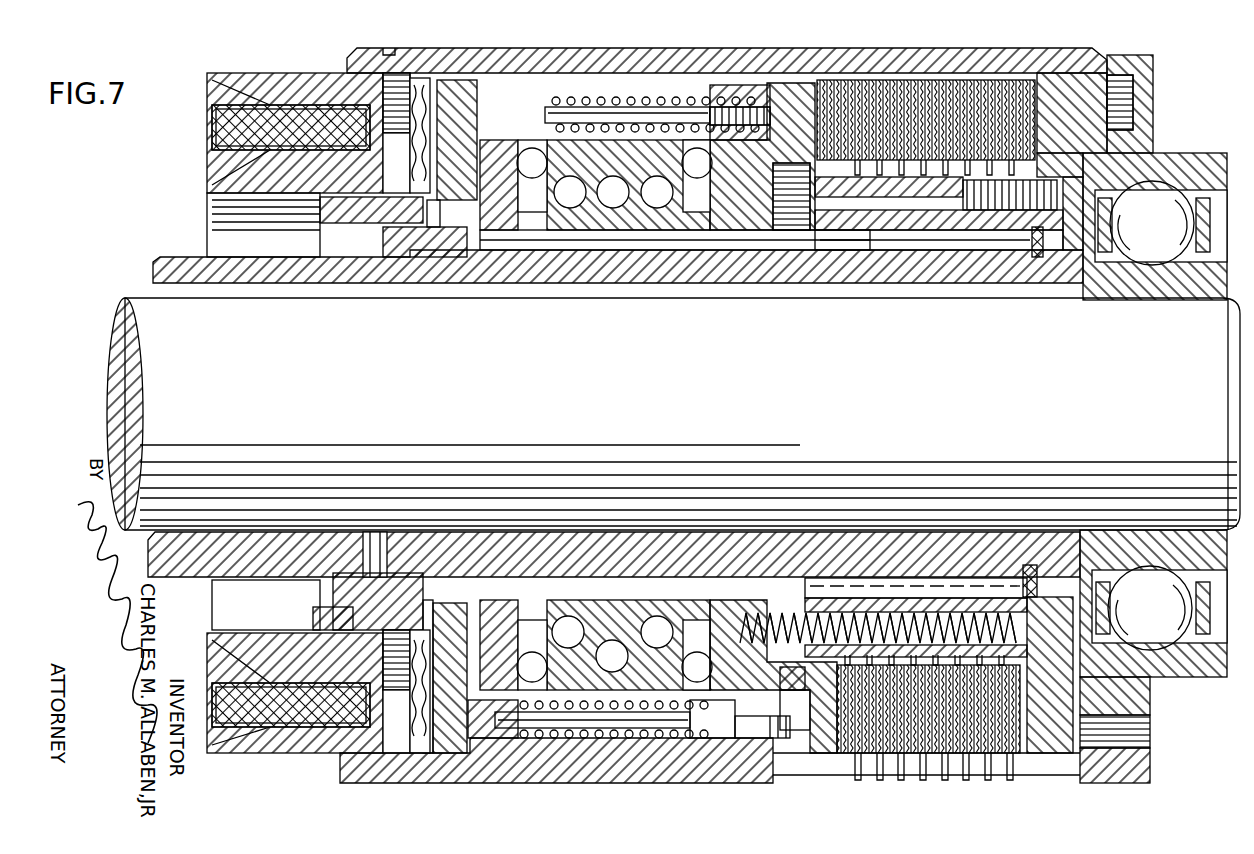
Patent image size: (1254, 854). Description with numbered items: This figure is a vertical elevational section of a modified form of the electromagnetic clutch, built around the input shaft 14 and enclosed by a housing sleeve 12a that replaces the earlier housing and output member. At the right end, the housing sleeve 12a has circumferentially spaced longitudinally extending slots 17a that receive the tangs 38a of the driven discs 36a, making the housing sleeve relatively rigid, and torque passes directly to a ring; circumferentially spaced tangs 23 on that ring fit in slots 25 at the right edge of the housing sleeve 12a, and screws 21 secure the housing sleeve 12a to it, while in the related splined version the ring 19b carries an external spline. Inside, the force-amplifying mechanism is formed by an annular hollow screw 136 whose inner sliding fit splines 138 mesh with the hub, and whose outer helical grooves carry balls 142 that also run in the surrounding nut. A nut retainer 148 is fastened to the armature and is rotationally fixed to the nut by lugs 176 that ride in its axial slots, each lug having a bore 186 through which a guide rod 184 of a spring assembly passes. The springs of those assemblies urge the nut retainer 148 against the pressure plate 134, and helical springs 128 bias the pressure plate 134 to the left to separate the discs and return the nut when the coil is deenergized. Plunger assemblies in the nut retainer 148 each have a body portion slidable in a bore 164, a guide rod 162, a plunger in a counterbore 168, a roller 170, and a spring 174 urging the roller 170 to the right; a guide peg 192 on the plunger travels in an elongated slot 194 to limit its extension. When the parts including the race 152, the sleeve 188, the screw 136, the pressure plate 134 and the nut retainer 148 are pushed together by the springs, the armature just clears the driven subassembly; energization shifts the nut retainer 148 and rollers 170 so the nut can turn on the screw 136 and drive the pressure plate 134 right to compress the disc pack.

The shaft 14 is at (172, 360).
The housing sleeve 12a is at (962, 60).
The screws 21 is at (1138, 58).
The ring 19b is at (1150, 122).
The bore 186 is at (556, 98).
The guide rod 184 is at (632, 95).
The nut retainer 148 is at (740, 86).
The pressure plate 134 is at (808, 96).
The sleeve 188 is at (422, 250).
The race 152 is at (484, 250).
The annular hollow screw 136 is at (578, 205).
The balls 142 is at (612, 200).
The sliding fit splines 138 is at (660, 246).
The helical springs 128 is at (870, 618).
The bore 164 is at (475, 720).
The lugs 176 is at (530, 712).
The guide rod 162 is at (572, 718).
The spring 174 is at (602, 692).
The elongated slot 194 is at (652, 738).
The guide peg 192 is at (700, 740).
The counterbore 168 is at (740, 740).
The roller 170 is at (782, 728).
The slots 17a is at (822, 762).
The clutch plates 38a is at (906, 768).
The driven discs 36a is at (958, 760).
The slots 25 is at (1068, 768).
The tangs 23 is at (1118, 772).